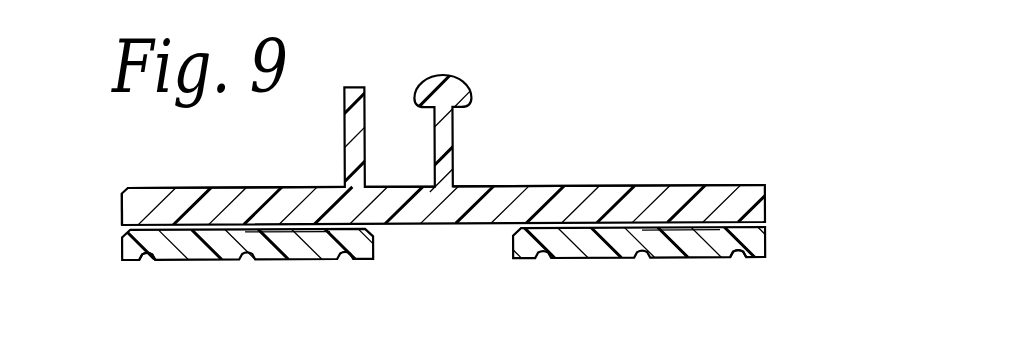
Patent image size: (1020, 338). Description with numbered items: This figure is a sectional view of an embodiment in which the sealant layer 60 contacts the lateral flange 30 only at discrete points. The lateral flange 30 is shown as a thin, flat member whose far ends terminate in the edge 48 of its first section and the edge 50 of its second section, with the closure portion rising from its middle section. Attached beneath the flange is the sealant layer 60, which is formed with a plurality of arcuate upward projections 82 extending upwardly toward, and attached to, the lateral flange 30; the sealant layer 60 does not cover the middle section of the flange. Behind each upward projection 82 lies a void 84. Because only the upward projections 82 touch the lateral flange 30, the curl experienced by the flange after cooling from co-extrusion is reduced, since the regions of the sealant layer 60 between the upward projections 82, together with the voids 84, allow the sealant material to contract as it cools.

The lateral flange 30 is at (782, 203).
The edge 48 is at (765, 185).
The edge 50 is at (122, 209).
The sealant layer 60 is at (782, 241).
The upward projection 82 is at (245, 229).
The void 84 is at (144, 259).